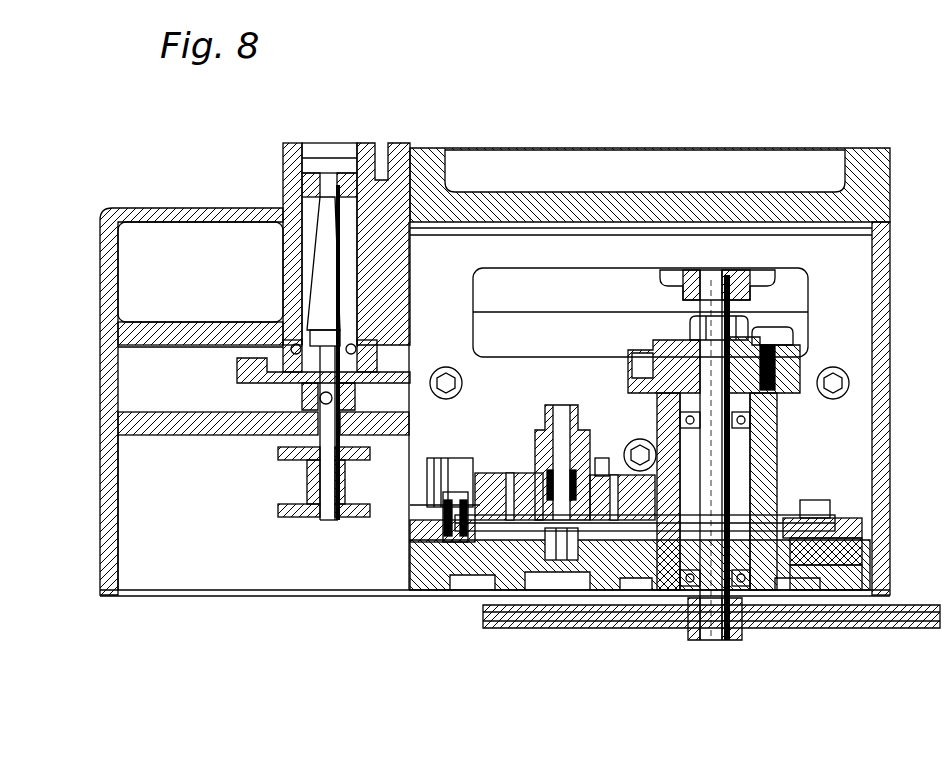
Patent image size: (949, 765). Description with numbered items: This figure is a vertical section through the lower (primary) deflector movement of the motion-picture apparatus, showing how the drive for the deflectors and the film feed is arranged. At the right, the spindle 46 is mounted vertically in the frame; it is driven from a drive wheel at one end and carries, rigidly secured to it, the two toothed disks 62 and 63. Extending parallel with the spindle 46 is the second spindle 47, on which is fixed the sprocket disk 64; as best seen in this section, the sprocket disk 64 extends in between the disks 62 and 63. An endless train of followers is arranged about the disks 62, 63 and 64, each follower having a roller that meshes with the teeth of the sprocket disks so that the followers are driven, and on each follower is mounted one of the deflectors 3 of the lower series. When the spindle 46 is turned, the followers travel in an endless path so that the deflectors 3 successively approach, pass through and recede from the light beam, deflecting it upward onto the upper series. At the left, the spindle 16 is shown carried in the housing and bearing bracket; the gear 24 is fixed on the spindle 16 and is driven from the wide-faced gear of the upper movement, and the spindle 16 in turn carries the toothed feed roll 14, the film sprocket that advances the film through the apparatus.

The deflector of the lower or primary series 3 is at (447, 458).
The feed roll 14 is at (287, 505).
The spindle 16 is at (326, 520).
The gear 24 is at (237, 372).
The spindle 46 is at (712, 368).
The second spindle 47 is at (560, 410).
The disk 62 is at (805, 540).
The disk 63 is at (805, 565).
The sprocket disk 64 is at (595, 545).